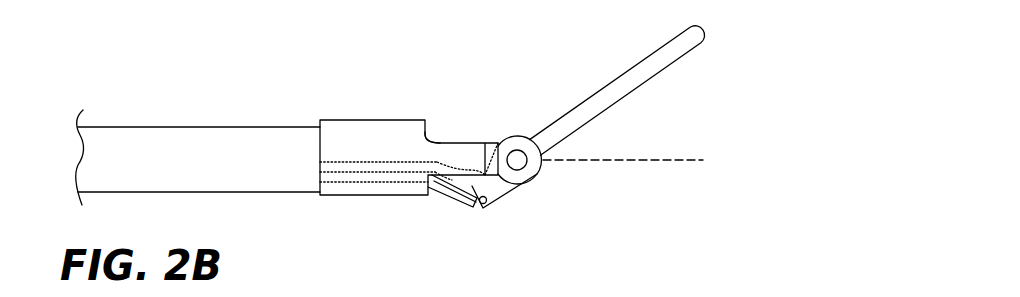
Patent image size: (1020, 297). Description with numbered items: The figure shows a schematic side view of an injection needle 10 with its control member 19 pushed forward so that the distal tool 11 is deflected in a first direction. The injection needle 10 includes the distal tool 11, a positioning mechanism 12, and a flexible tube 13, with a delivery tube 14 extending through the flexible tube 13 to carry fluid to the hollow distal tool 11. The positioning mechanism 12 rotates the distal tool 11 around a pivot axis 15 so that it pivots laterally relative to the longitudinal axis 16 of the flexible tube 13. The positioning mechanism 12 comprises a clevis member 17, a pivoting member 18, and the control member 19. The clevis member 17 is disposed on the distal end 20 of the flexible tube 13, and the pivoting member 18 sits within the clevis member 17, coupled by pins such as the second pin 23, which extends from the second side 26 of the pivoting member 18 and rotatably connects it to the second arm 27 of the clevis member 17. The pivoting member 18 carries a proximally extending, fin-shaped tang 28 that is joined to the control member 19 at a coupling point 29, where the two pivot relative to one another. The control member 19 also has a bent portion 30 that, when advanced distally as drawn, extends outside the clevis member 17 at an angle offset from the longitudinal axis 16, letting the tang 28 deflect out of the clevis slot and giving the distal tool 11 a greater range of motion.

The injection needle 10 is at (108, 46).
The distal tool 11 is at (671, 66).
The positioning mechanism 12 is at (451, 100).
The flexible tube 13 is at (222, 127).
The delivery tube 14 is at (463, 167).
The pivot axis 15 is at (527, 183).
The longitudinal axis 16 is at (664, 160).
The clevis member 17 is at (393, 117).
The pivoting member 18 is at (512, 129).
The control member 19 is at (367, 188).
The distal end 20 is at (317, 200).
The second pin 23 is at (522, 160).
The second side 26 is at (463, 122).
The second arm 27 is at (441, 140).
The tang 28 is at (503, 196).
The coupling point 29 is at (483, 209).
The bent portion 30 is at (457, 195).